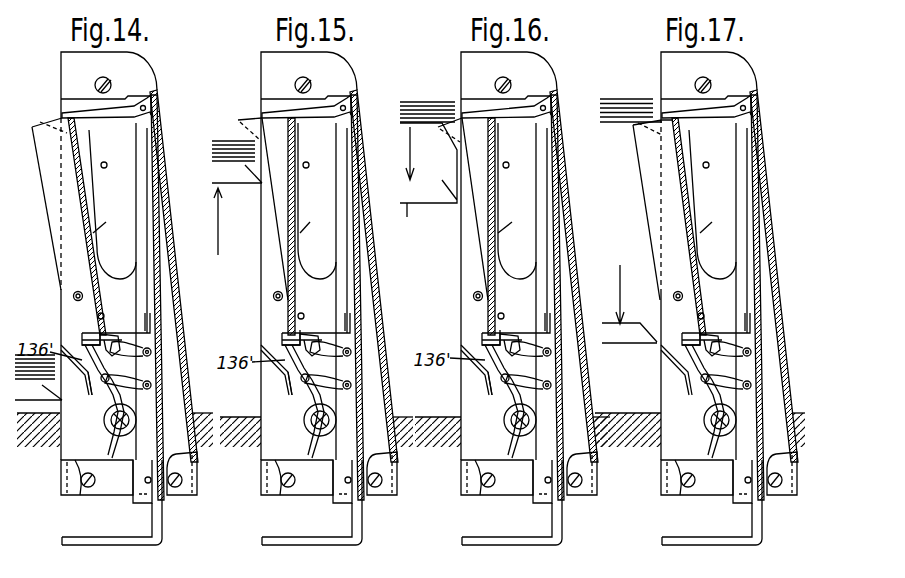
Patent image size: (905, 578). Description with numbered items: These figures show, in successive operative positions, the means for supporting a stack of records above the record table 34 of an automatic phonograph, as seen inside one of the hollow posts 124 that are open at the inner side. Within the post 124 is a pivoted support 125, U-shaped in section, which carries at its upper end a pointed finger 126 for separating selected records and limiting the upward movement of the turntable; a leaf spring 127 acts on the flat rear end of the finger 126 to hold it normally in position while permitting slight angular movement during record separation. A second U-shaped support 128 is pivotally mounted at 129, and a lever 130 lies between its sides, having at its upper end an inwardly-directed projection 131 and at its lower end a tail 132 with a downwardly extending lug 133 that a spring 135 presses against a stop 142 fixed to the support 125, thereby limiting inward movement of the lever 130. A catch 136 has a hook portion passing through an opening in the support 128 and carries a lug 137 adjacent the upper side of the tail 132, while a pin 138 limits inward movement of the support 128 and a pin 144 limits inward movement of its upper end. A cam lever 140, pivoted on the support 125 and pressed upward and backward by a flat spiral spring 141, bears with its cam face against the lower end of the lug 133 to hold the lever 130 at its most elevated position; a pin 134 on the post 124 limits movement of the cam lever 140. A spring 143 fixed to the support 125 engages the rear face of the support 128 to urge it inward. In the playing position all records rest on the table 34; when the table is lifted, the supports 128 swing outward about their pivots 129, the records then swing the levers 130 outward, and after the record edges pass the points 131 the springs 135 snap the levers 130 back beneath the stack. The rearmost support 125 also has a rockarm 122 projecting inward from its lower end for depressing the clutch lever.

In FIG. 14, the record table 34 is at (30, 393).
In FIG. 15, the record table 34 is at (222, 172).
In FIG. 16, the record table 34 is at (412, 192).
In FIG. 17, the record table 34 is at (623, 335).
In FIG. 14, the rockarm 122 is at (114, 540).
In FIG. 15, the rockarm 122 is at (312, 502).
In FIG. 16, the rockarm 122 is at (512, 502).
In FIG. 17, the rockarm 122 is at (712, 502).
In FIG. 14, the post 124 is at (162, 237).
In FIG. 15, the post 124 is at (330, 201).
In FIG. 16, the post 124 is at (531, 201).
In FIG. 17, the post 124 is at (729, 204).
In FIG. 14, the pivoted support 125 is at (166, 291).
In FIG. 14, the pointed finger 126 is at (105, 118).
In FIG. 15, the pointed finger 126 is at (306, 120).
In FIG. 16, the pointed finger 126 is at (506, 120).
In FIG. 17, the pointed finger 126 is at (706, 120).
In FIG. 14, the leaf spring 127 is at (159, 160).
In FIG. 15, the leaf spring 127 is at (373, 297).
In FIG. 16, the leaf spring 127 is at (573, 297).
In FIG. 17, the leaf spring 127 is at (778, 297).
In FIG. 14, the support 128 is at (61, 247).
In FIG. 15, the support 128 is at (259, 226).
In FIG. 16, the support 128 is at (454, 226).
In FIG. 17, the support 128 is at (659, 226).
In FIG. 14, the pivot 129 is at (73, 296).
In FIG. 15, the pivot 129 is at (253, 297).
In FIG. 16, the pivot 129 is at (449, 295).
In FIG. 17, the pivot 129 is at (653, 300).
In FIG. 14, the lever 130 is at (66, 199).
In FIG. 15, the lever 130 is at (256, 209).
In FIG. 16, the lever 130 is at (451, 209).
In FIG. 17, the lever 130 is at (642, 212).
In FIG. 14, the inwardly-directed projection 131 is at (50, 125).
In FIG. 15, the inwardly-directed projection 131 is at (237, 115).
In FIG. 16, the inwardly-directed projection 131 is at (434, 138).
In FIG. 17, the inwardly-directed projection 131 is at (633, 139).
In FIG. 14, the tail 132 is at (152, 352).
In FIG. 15, the tail 132 is at (360, 350).
In FIG. 16, the tail 132 is at (562, 353).
In FIG. 17, the tail 132 is at (687, 367).
In FIG. 14, the lug 133 is at (88, 392).
In FIG. 15, the lug 133 is at (255, 393).
In FIG. 16, the lug 133 is at (454, 396).
In FIG. 17, the lug 133 is at (659, 382).
In FIG. 14, the pin 134 is at (150, 395).
In FIG. 15, the pin 134 is at (350, 401).
In FIG. 16, the pin 134 is at (553, 401).
In FIG. 17, the pin 134 is at (674, 401).
In FIG. 14, the spring 135 is at (129, 485).
In FIG. 15, the spring 135 is at (329, 483).
In FIG. 16, the spring 135 is at (529, 483).
In FIG. 17, the spring 135 is at (729, 483).
In FIG. 14, the catch 136 is at (95, 333).
In FIG. 15, the catch 136 is at (258, 330).
In FIG. 16, the catch 136 is at (457, 340).
In FIG. 17, the catch 136 is at (662, 352).
In FIG. 14, the lug 137 is at (116, 340).
In FIG. 15, the lug 137 is at (318, 331).
In FIG. 16, the lug 137 is at (519, 331).
In FIG. 17, the lug 137 is at (720, 331).
In FIG. 14, the pin 138 is at (103, 313).
In FIG. 15, the pin 138 is at (313, 300).
In FIG. 16, the pin 138 is at (517, 300).
In FIG. 17, the pin 138 is at (716, 300).
In FIG. 14, the cam lever 140 is at (152, 385).
In FIG. 15, the cam lever 140 is at (358, 374).
In FIG. 16, the cam lever 140 is at (558, 378).
In FIG. 17, the cam lever 140 is at (744, 394).
In FIG. 14, the spring 141 is at (118, 437).
In FIG. 15, the spring 141 is at (319, 432).
In FIG. 16, the spring 141 is at (519, 432).
In FIG. 17, the spring 141 is at (719, 432).
In FIG. 14, the stop 142 is at (158, 336).
In FIG. 15, the stop 142 is at (346, 326).
In FIG. 16, the stop 142 is at (549, 315).
In FIG. 17, the stop 142 is at (745, 312).
In FIG. 14, the spring 143 is at (111, 218).
In FIG. 15, the spring 143 is at (313, 219).
In FIG. 16, the spring 143 is at (516, 218).
In FIG. 17, the spring 143 is at (717, 218).
In FIG. 14, the pin 144 is at (104, 169).
In FIG. 15, the pin 144 is at (316, 178).
In FIG. 16, the pin 144 is at (518, 178).
In FIG. 17, the pin 144 is at (718, 178).